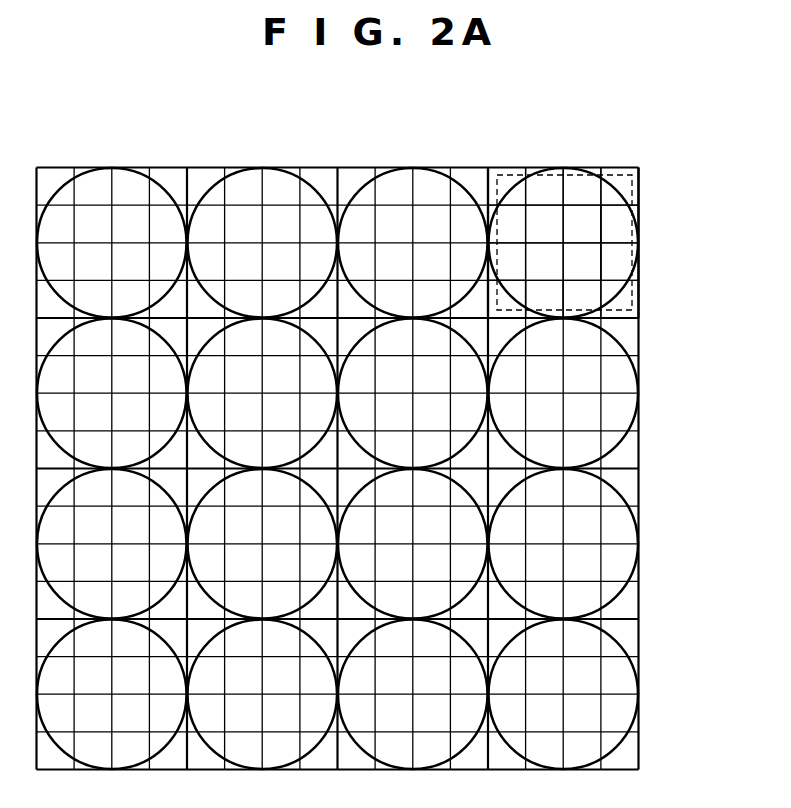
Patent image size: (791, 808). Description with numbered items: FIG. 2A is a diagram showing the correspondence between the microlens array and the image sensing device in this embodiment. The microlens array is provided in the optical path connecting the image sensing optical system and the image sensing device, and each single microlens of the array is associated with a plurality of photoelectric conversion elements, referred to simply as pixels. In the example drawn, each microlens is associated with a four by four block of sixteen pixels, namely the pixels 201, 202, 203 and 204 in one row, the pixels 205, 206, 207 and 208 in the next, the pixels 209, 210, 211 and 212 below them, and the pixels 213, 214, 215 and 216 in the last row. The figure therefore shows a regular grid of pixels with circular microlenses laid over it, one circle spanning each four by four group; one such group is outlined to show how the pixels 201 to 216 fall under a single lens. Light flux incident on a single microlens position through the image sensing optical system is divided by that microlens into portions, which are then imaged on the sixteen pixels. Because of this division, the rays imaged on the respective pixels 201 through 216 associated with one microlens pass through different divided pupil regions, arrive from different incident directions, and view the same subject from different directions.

The pixel 201 is at (512, 222).
The pixel 202 is at (560, 195).
The pixel 203 is at (580, 192).
The pixel 204 is at (622, 182).
The pixel 205 is at (503, 212).
The pixel 206 is at (540, 223).
The pixel 207 is at (583, 220).
The pixel 208 is at (617, 227).
The pixel 209 is at (500, 262).
The pixel 210 is at (563, 238).
The pixel 211 is at (583, 260).
The pixel 212 is at (618, 255).
The pixel 213 is at (507, 303).
The pixel 214 is at (548, 297).
The pixel 215 is at (583, 298).
The pixel 216 is at (627, 297).